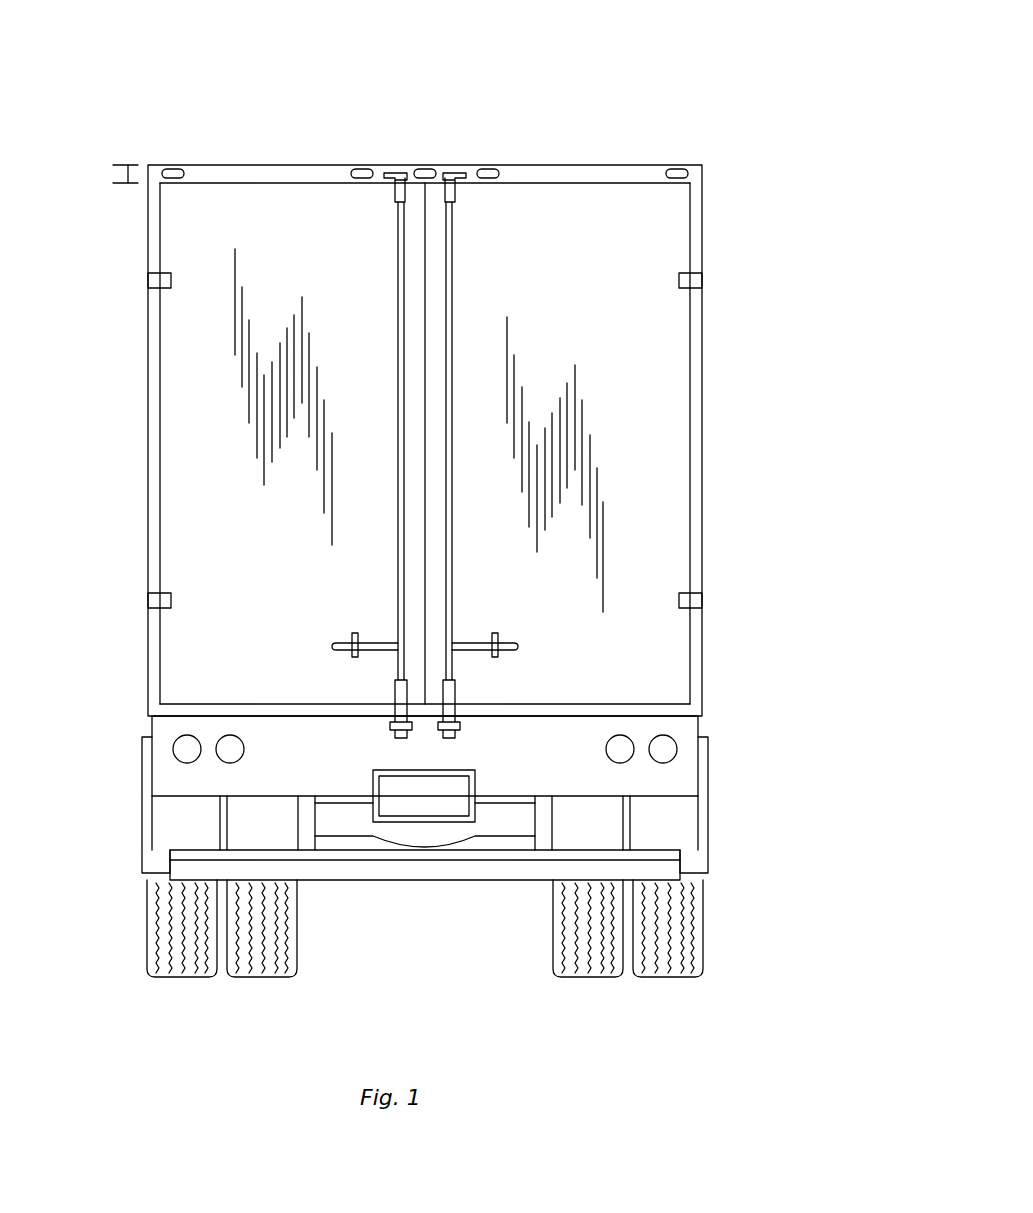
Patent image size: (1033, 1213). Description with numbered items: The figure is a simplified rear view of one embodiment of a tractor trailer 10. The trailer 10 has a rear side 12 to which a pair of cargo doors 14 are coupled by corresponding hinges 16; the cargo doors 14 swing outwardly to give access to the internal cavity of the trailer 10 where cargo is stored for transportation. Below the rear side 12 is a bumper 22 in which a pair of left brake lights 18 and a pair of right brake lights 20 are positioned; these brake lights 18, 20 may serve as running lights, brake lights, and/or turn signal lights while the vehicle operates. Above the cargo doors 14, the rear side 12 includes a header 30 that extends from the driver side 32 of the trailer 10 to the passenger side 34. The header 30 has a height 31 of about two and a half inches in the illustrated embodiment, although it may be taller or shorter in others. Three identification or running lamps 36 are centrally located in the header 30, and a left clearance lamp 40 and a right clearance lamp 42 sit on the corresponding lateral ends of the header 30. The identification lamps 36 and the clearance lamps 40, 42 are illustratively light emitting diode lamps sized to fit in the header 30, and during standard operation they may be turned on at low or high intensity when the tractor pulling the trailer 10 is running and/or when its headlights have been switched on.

The trailer 10 is at (657, 93).
The rear side 12 is at (665, 212).
The cargo doors 14 is at (175, 655).
The hinges 16 is at (152, 290).
The left brake lights 18 is at (232, 762).
The right brake lights 20 is at (618, 762).
The bumper 22 is at (508, 782).
The header 30 is at (578, 170).
The height 31 is at (120, 175).
The driver side 32 is at (150, 410).
The passenger side 34 is at (700, 410).
The identification lamps 36 is at (362, 165).
The left clearance lamp 40 is at (182, 167).
The right clearance lamp 42 is at (680, 167).